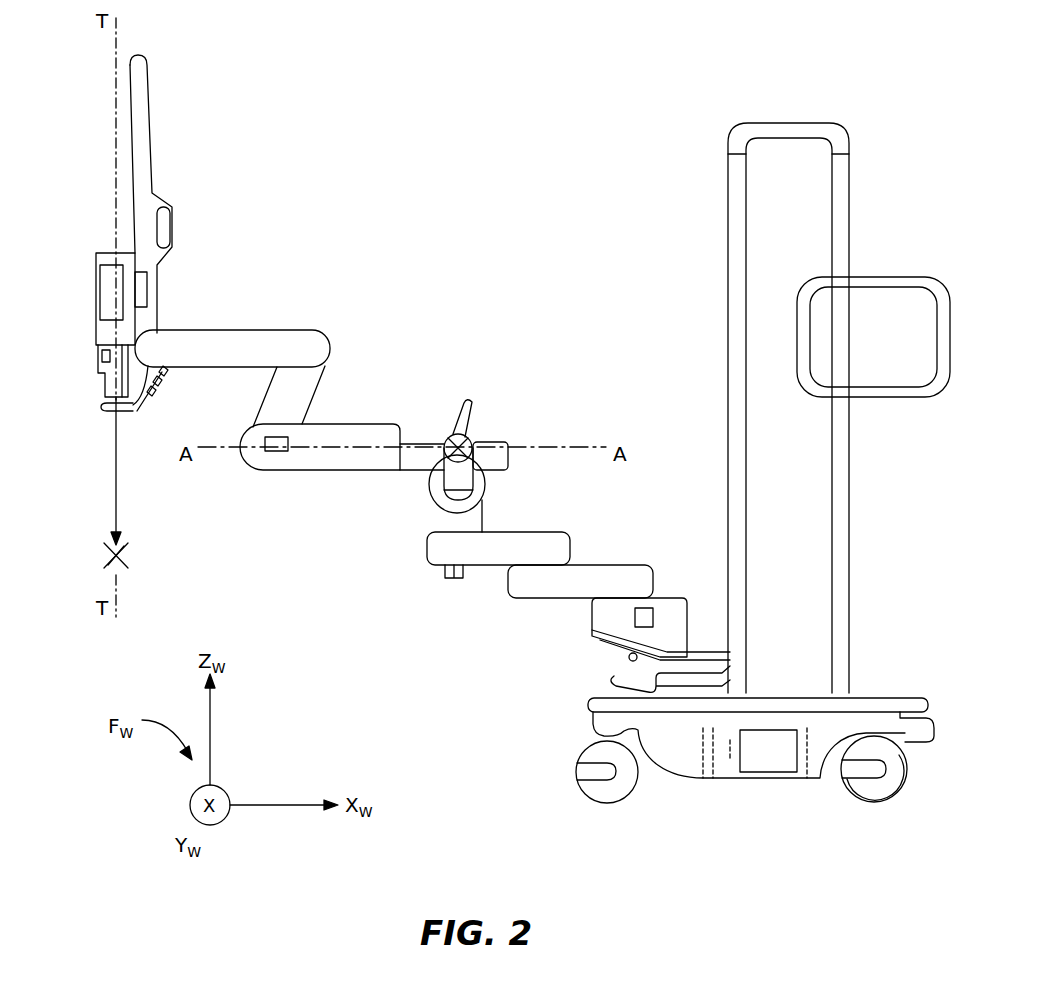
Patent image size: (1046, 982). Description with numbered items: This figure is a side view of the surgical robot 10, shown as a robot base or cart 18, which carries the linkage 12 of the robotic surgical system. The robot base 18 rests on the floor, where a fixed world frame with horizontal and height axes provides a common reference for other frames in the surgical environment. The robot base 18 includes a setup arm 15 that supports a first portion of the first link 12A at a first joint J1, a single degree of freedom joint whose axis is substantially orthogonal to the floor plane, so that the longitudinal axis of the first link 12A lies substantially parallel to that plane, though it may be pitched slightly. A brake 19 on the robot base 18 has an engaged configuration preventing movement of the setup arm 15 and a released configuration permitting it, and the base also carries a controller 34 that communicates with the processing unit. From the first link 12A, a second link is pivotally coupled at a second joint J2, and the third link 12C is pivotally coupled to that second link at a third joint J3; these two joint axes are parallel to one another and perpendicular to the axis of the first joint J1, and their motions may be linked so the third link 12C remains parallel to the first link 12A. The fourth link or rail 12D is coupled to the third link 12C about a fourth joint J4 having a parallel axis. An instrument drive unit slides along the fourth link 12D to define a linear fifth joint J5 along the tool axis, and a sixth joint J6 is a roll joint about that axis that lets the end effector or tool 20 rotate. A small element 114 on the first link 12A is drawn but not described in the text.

The surgical robot 10 is at (750, 102).
The linkage 12 is at (296, 312).
The first link 12A is at (337, 458).
The third link 12C is at (265, 340).
The fourth link or rail 12D is at (150, 187).
The sensor on arm link 114 is at (280, 436).
The setup arm 15 is at (660, 583).
The brake 19 is at (635, 616).
The controller 34 is at (777, 745).
The robot base or cart 18 is at (827, 725).
The end effector or tool 20 is at (107, 557).
The first joint J1 is at (453, 432).
The second joint J2 is at (270, 458).
The third joint J3 is at (313, 345).
The fourth joint J4 is at (148, 347).
The fifth joint J5 is at (130, 130).
The sixth joint J6 is at (110, 387).